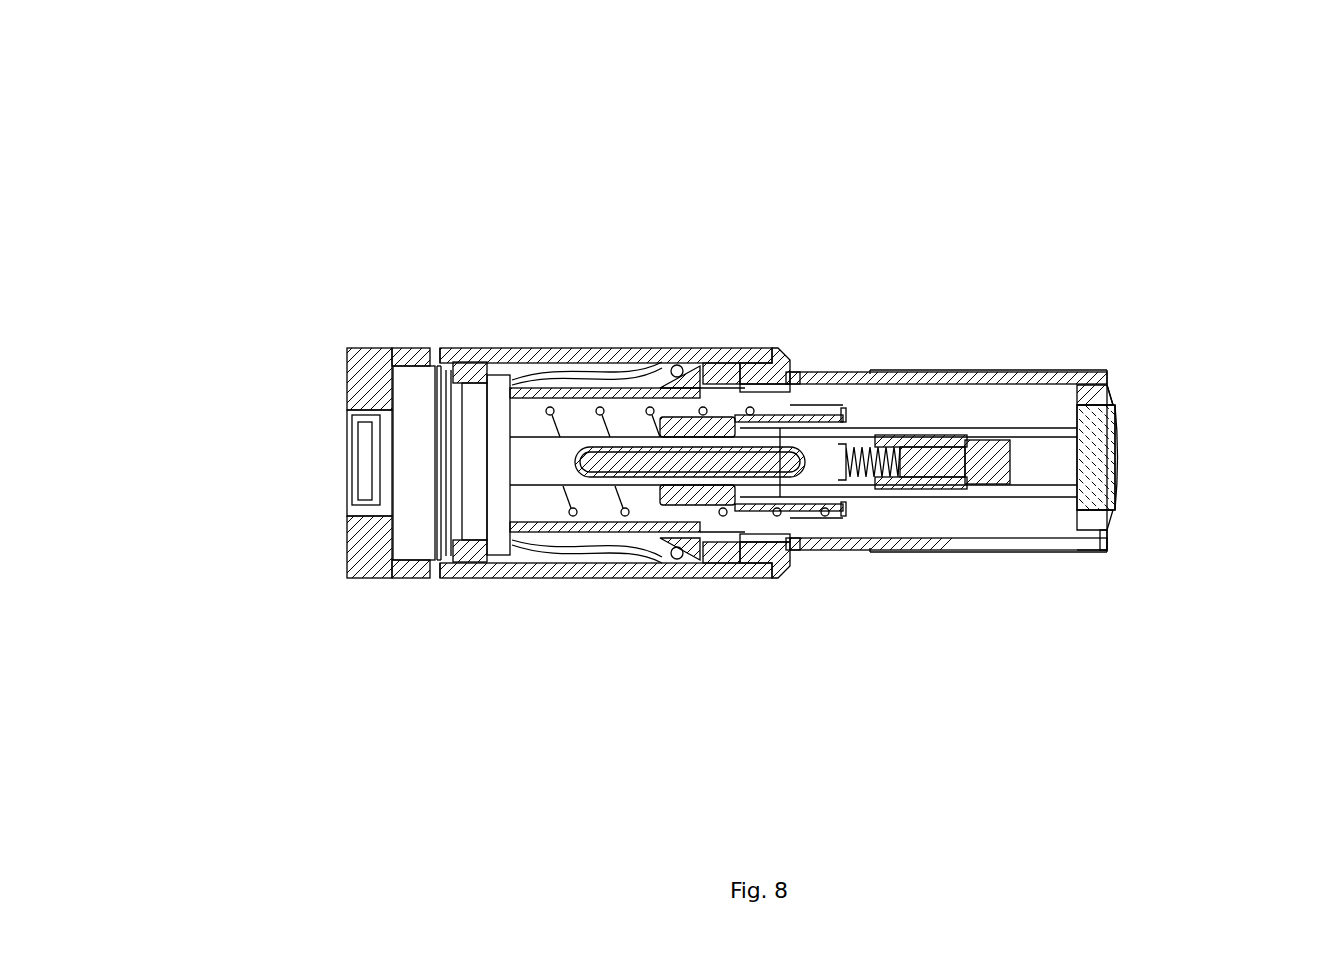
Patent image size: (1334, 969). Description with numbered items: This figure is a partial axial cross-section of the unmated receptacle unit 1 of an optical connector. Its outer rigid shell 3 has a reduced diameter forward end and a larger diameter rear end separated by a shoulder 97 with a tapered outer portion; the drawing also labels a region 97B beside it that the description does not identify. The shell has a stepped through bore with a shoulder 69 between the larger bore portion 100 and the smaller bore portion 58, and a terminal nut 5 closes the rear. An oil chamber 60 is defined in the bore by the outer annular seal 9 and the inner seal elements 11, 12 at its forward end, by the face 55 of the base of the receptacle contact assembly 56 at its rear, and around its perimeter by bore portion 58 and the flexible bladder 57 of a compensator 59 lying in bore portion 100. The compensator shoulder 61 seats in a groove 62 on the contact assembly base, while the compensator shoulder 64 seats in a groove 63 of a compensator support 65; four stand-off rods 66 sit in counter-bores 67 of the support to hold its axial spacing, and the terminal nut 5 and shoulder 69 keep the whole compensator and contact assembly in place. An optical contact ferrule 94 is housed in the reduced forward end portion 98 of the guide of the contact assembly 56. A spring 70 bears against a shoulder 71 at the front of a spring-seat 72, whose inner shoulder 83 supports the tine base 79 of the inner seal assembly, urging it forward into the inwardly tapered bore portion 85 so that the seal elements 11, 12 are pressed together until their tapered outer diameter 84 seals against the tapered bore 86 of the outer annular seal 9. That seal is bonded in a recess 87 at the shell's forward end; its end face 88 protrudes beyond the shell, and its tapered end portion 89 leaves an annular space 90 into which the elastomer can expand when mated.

The receptacle unit 1 is at (768, 57).
The outer rigid shell 3 is at (665, 545).
The terminal nut 5 is at (345, 357).
The receptacle outer annular seal 9 is at (1100, 372).
The receptacle seal element 11 is at (1096, 457).
The receptacle seal element 12 is at (1115, 460).
The face of end portion 55 is at (510, 403).
The receptacle contact assembly 56 is at (420, 393).
The bladder 57 is at (627, 390).
The bore portion 58 is at (840, 418).
The compensator 59 is at (543, 362).
The oil chamber 60 is at (593, 507).
The compensator shoulder 61 is at (468, 380).
The groove 62 is at (446, 560).
The groove 63 is at (740, 390).
The compensator shoulder 64 is at (733, 360).
The compensator support 65 is at (750, 520).
The stand-off rods 66 is at (710, 495).
The counter-bores 67 is at (703, 373).
The shoulder 69 is at (778, 503).
The spring 70 is at (627, 510).
The shoulder 71 is at (875, 405).
The spring-seat 72 is at (820, 507).
The tine base 79 is at (740, 530).
The shoulder 83 is at (657, 380).
The tapered outer diameter 84 is at (1188, 337).
The tapered bore portion 85 is at (1085, 377).
The tapered bore 86 is at (1113, 508).
The recess 87 is at (1100, 540).
The end face 88 is at (1112, 520).
The tapered end portion 89 is at (1113, 400).
The annular space 90 is at (1108, 535).
The optical contact ferrule 94 is at (998, 440).
The shoulder 97 is at (765, 372).
The recess 97B is at (778, 380).
The forward end portion 98 is at (988, 480).
The bore portion 100 is at (583, 530).